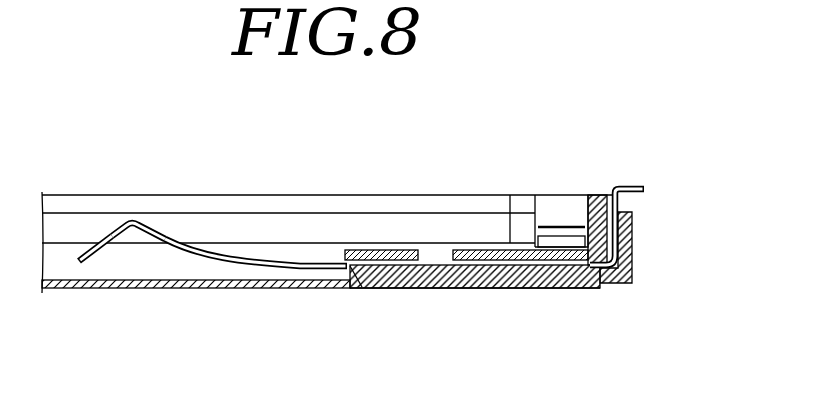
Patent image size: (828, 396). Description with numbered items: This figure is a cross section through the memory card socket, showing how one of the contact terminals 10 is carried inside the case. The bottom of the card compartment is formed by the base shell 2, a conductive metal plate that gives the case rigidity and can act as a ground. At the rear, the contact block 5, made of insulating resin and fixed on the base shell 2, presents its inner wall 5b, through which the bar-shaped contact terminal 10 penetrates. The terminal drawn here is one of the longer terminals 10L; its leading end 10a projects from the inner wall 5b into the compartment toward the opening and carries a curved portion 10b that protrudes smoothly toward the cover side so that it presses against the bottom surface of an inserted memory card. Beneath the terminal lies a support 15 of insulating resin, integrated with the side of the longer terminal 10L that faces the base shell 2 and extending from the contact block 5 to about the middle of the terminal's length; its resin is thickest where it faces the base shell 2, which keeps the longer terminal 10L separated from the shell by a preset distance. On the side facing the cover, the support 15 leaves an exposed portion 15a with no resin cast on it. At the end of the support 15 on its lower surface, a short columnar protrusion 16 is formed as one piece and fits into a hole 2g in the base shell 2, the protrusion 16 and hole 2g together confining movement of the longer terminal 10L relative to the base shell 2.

The base shell 2 is at (215, 289).
The hole 2g is at (362, 289).
The contact block 5 is at (632, 250).
The inner wall 5b is at (567, 226).
The contact terminal 10 is at (209, 240).
The leading end 10a is at (86, 266).
The curved portion 10b is at (131, 221).
The longer terminal 10L is at (236, 257).
The support 15 is at (485, 290).
The exposed portion 15a is at (438, 252).
The protrusion 16 is at (396, 289).